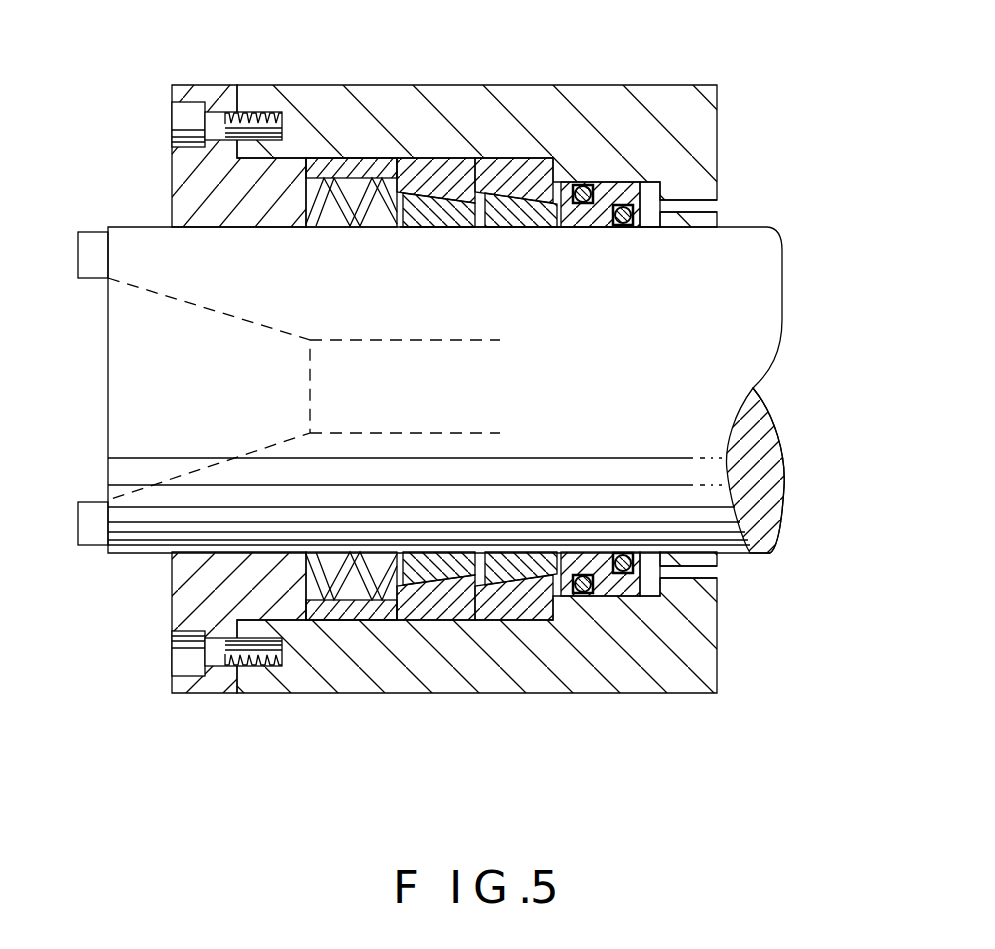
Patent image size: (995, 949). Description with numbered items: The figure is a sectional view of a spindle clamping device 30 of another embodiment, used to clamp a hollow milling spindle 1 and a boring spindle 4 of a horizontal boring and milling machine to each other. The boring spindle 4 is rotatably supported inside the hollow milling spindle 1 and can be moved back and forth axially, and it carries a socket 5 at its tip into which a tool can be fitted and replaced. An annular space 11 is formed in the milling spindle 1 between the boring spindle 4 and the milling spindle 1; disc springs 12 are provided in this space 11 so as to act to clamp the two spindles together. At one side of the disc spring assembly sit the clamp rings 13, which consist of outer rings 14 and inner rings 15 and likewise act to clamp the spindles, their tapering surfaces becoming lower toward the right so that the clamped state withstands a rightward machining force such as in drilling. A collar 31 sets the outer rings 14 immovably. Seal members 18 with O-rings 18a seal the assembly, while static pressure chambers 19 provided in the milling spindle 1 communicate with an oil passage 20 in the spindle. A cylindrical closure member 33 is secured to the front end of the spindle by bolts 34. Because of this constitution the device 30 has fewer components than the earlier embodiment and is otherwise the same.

The milling spindle 1 is at (445, 693).
The boring spindle 4 is at (138, 235).
The socket 5 is at (92, 323).
The annular space 11 is at (420, 158).
The disc springs 12 is at (335, 228).
The clamp rings 13 is at (463, 258).
The outer rings 14 is at (452, 62).
The inner rings 15 is at (428, 228).
The seal members 18 is at (603, 182).
The O-rings 18a is at (625, 228).
The static pressure chambers 19 is at (655, 228).
The oil passage 20 is at (697, 197).
The spindle clamping device 30 is at (575, 305).
The collar 31 is at (350, 158).
The cylindrical closure member 33 is at (188, 589).
The bolts 34 is at (185, 650).